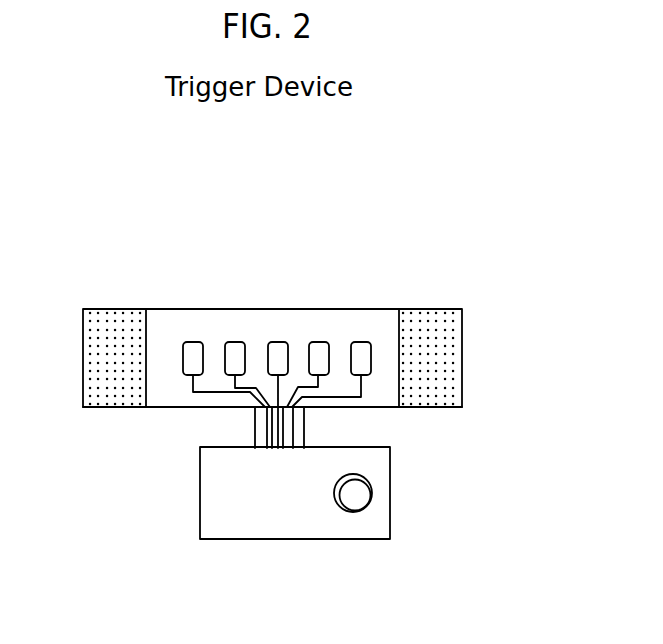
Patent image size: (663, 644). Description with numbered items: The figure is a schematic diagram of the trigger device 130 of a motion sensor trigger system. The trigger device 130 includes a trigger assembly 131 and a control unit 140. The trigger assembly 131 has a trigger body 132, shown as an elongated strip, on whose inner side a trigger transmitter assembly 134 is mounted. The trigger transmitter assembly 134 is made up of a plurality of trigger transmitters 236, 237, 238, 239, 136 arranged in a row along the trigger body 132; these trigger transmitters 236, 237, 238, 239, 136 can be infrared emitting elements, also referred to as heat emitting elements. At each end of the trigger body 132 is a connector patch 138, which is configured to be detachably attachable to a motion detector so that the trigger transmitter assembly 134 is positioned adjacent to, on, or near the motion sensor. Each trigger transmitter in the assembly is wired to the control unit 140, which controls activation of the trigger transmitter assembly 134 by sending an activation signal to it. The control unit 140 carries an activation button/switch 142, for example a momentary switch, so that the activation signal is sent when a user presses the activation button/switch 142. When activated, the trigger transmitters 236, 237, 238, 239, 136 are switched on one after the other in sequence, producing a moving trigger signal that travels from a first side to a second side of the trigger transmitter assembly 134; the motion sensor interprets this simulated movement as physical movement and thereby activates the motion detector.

The trigger device 130 is at (120, 257).
The trigger assembly 131 is at (143, 293).
The trigger body 132 is at (181, 405).
The trigger transmitter assembly 134 is at (362, 207).
The trigger transmitter 136 is at (360, 335).
The connector patch 138 is at (438, 368).
The control unit 140 is at (197, 493).
The activation button/switch 142 is at (360, 496).
The trigger transmitter 236 is at (192, 333).
The trigger transmitter 237 is at (237, 333).
The trigger transmitter 238 is at (278, 337).
The trigger transmitter 239 is at (322, 335).